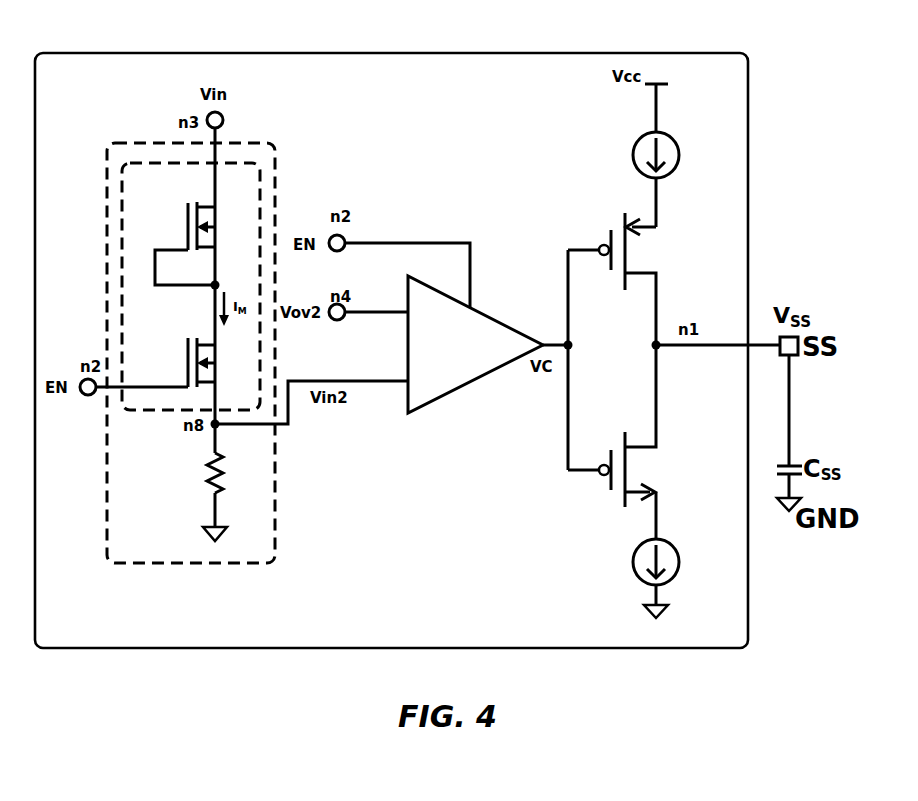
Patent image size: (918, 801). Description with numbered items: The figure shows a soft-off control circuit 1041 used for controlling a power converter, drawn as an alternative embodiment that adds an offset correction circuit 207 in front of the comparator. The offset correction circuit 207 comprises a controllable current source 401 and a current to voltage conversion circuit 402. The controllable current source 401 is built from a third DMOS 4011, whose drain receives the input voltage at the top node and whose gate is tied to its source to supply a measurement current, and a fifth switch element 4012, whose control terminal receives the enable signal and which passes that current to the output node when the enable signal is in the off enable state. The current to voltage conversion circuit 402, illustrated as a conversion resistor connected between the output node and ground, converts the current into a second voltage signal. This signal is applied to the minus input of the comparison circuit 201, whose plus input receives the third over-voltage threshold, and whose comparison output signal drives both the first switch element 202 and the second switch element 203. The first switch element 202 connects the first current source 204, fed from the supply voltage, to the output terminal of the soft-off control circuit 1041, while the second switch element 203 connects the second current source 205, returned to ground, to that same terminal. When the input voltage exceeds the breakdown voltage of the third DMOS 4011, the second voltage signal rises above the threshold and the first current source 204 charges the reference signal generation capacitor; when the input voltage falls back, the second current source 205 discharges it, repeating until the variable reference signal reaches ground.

The soft-off control circuit 1041 is at (357, 53).
The offset correction circuit 207 is at (96, 180).
The controllable current source 401 is at (191, 286).
The third DMOS 4011 is at (183, 220).
The fifth switch element 4012 is at (183, 368).
The current to voltage conversion circuit 402 is at (248, 464).
The comparison circuit 201 is at (475, 344).
The first switch element 202 is at (600, 230).
The second switch element 203 is at (604, 489).
The first current source 204 is at (630, 155).
The second current source 205 is at (630, 568).